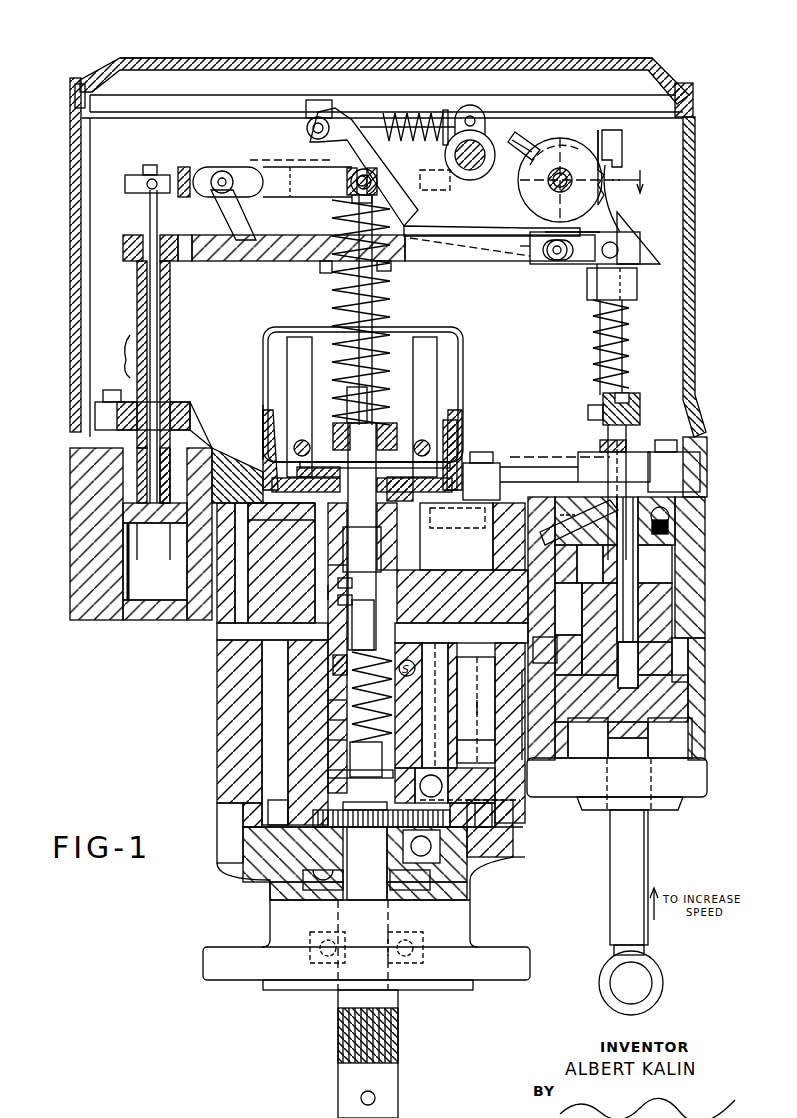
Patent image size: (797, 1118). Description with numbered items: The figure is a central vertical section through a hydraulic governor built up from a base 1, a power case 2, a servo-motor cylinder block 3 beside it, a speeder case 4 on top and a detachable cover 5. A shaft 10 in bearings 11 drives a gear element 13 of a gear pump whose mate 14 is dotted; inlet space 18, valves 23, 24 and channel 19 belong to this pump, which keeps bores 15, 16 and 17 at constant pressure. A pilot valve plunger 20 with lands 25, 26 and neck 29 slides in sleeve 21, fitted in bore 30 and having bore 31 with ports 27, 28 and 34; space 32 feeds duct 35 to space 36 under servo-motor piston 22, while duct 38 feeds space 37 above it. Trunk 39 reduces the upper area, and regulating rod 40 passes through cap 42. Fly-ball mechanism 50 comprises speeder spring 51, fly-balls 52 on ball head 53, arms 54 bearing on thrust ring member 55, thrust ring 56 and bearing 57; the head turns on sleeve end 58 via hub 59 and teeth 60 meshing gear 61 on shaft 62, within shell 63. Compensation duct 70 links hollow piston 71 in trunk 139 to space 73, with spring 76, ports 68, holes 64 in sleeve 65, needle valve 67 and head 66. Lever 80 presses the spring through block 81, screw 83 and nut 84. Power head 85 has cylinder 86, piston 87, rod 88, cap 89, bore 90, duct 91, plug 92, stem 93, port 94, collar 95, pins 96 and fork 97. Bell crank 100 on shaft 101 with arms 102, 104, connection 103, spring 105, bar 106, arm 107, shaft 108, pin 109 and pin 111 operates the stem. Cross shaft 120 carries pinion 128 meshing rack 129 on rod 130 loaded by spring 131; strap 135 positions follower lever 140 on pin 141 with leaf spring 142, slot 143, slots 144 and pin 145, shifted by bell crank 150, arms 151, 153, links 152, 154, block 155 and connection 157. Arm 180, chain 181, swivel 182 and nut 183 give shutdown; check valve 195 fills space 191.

The base 1 is at (270, 882).
The power case 2 is at (217, 724).
The servo-motor cylinder block 3 is at (708, 592).
The speeder case 4 is at (70, 272).
The cover 5 is at (120, 62).
The shaft 10 is at (375, 892).
The bearings 11 is at (310, 938).
The gear element 13 is at (225, 870).
The pump gear 14 is at (500, 812).
The bore 15 is at (476, 740).
The bore 16 is at (275, 732).
The bore 17 is at (372, 695).
The supply inlet space 18 is at (381, 846).
The cross channel 19 is at (253, 831).
The pilot valve plunger 20 is at (370, 499).
The pilot valve sleeve 21 is at (333, 548).
The servo-motor piston 22 is at (600, 707).
The inlet valve 23 is at (470, 876).
The outlet valve 24 is at (470, 795).
The main land portion 25 is at (371, 708).
The main land portion 26 is at (370, 560).
The lateral ports 27 is at (385, 634).
The lateral ports 28 is at (328, 565).
The necked portion 29 is at (338, 583).
The cylindrical bore 30 is at (328, 745).
The axial bore 31 is at (328, 710).
The space 32 is at (338, 600).
The lateral ports 34 is at (302, 586).
The duct 35 is at (460, 545).
The space 36 is at (670, 738).
The servo-motor cylinder space 37 is at (690, 652).
The duct 38 is at (540, 698).
The trunk portion 39 is at (606, 624).
The regulating rod 40 is at (640, 848).
The lower cylinder closure cap 42 is at (617, 784).
The fly-ball mechanism 50 is at (478, 350).
The speeder spring 51 is at (390, 322).
The fly-balls 52 is at (308, 362).
The ball head 53 is at (458, 440).
The fly-ball arms 54 is at (398, 476).
The thrust ring member 55 is at (488, 402).
The thrust ring 56 is at (333, 430).
The anti-friction bearing assembly 57 is at (395, 423).
The reduced upper end portion 58 is at (456, 536).
The hub portion 59 is at (310, 512).
The gear teeth 60 is at (312, 530).
The driving gear 61 is at (552, 515).
The vertical shaft 62 is at (479, 704).
The shell 63 is at (262, 346).
The lateral holes 64 is at (594, 474).
The sleeve 65 is at (640, 430).
The slotted head 66 is at (640, 400).
The needle valve 67 is at (700, 484).
The lateral ports 68 is at (333, 665).
The compensation fluid duct 70 is at (643, 585).
The hollow piston 71 is at (638, 575).
The space 73 is at (328, 774).
The coil spring 76 is at (328, 728).
The speed adjusting lever 80 is at (280, 262).
The block 81 is at (396, 268).
The screw 83 is at (350, 196).
The jamb nut 84 is at (370, 200).
The power head 85 is at (112, 356).
The power head cylinder 86 is at (185, 575).
The power head piston 87 is at (124, 540).
The power rod 88 is at (136, 302).
The cylinder closure cap 89 is at (180, 400).
The axial bore 90 is at (172, 352).
The duct 91 is at (230, 422).
The follow-up valve plug 92 is at (125, 483).
The adjusting stem 93 is at (160, 308).
The lateral port 94 is at (150, 460).
The collar 95 is at (123, 248).
The pins 96 is at (140, 265).
The bifurcated portion 97 is at (185, 263).
The bell crank 100 is at (312, 150).
The horizontal shaft 101 is at (350, 192).
The bifurcated arm 102 is at (182, 167).
The pin and slot connection 103 is at (140, 176).
The upstanding arm 104 is at (318, 100).
The spring 105 is at (415, 112).
The slotted bar 106 is at (385, 118).
The arm 107 is at (478, 120).
The speed adjustment shaft 108 is at (474, 172).
The pivot pin 109 is at (470, 115).
The pin 111 is at (306, 124).
The cross shaft 120 is at (568, 195).
The pinion 128 is at (606, 175).
The rack teeth 129 is at (598, 140).
The rod 130 is at (622, 150).
The spring 131 is at (630, 360).
The eccentric strap 135 is at (580, 140).
The trunk portion 139 is at (538, 113).
The follower lever 140 is at (625, 205).
The pin 141 is at (636, 240).
The leaf spring 142 is at (645, 180).
The slot 143 is at (595, 264).
The slots 144 is at (545, 264).
The pivot pin 145 is at (590, 270).
The bell crank 150 is at (280, 196).
The arm 151 is at (208, 168).
The link 152 is at (230, 222).
The arm 153 is at (340, 112).
The link 154 is at (455, 230).
The block 155 is at (545, 234).
The pin and slot connection 157 is at (224, 172).
The arm 180 is at (420, 178).
The flexible chain 181 is at (340, 320).
The swivel connection 182 is at (374, 366).
The hollow nut 183 is at (352, 385).
The space 191 is at (675, 550).
The check valve 195 is at (670, 517).